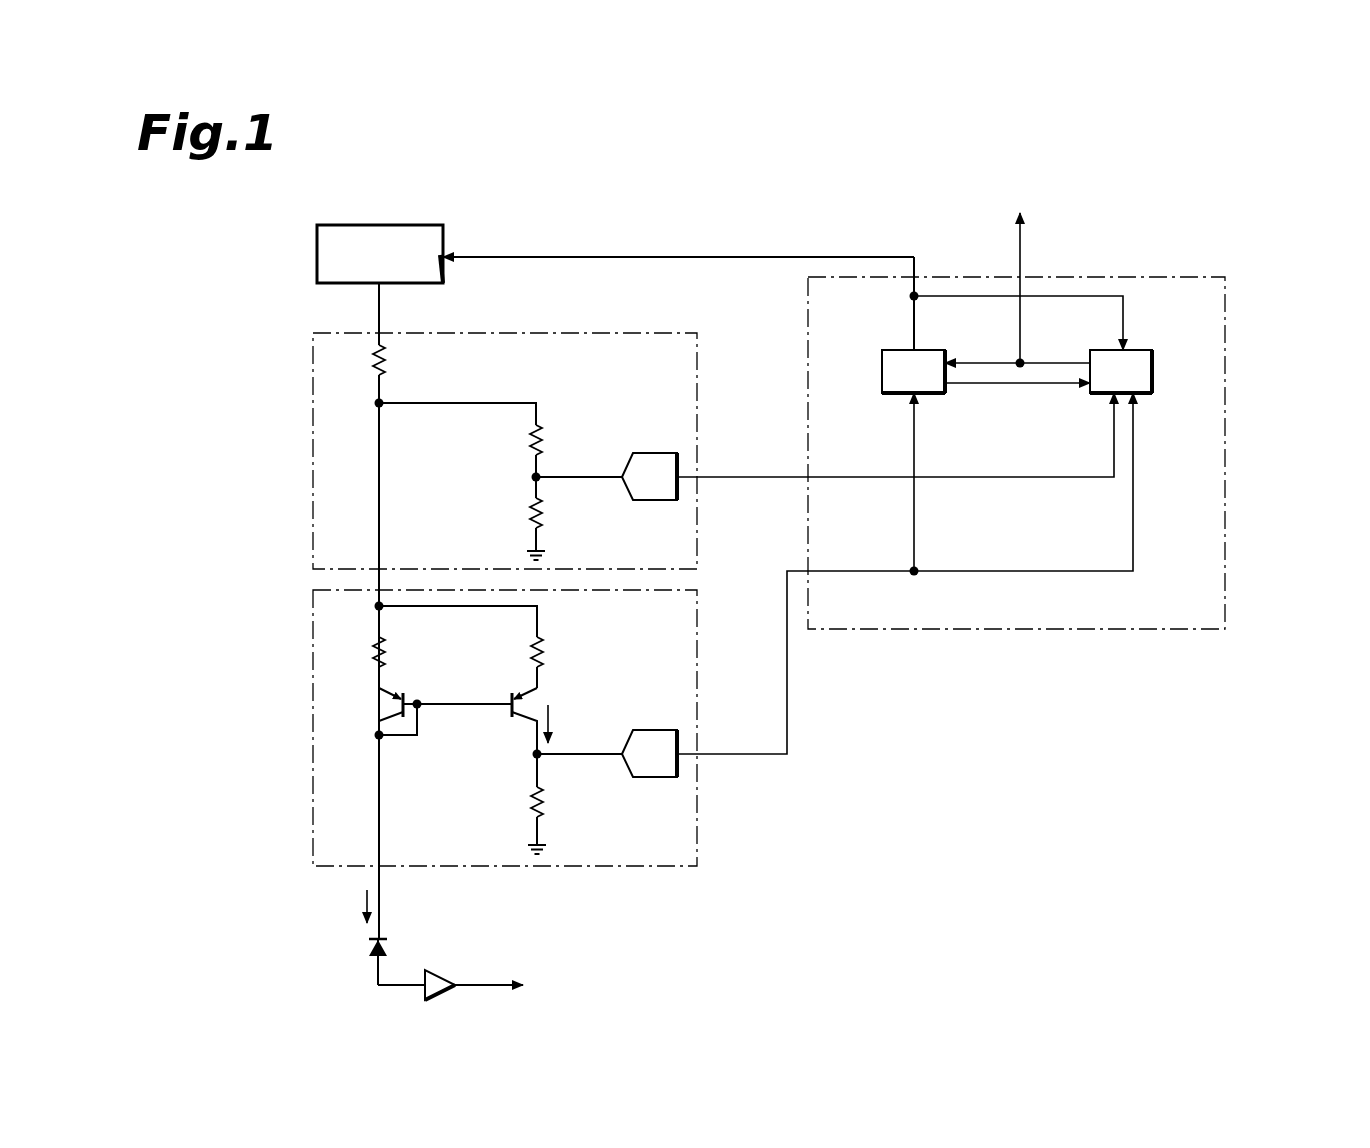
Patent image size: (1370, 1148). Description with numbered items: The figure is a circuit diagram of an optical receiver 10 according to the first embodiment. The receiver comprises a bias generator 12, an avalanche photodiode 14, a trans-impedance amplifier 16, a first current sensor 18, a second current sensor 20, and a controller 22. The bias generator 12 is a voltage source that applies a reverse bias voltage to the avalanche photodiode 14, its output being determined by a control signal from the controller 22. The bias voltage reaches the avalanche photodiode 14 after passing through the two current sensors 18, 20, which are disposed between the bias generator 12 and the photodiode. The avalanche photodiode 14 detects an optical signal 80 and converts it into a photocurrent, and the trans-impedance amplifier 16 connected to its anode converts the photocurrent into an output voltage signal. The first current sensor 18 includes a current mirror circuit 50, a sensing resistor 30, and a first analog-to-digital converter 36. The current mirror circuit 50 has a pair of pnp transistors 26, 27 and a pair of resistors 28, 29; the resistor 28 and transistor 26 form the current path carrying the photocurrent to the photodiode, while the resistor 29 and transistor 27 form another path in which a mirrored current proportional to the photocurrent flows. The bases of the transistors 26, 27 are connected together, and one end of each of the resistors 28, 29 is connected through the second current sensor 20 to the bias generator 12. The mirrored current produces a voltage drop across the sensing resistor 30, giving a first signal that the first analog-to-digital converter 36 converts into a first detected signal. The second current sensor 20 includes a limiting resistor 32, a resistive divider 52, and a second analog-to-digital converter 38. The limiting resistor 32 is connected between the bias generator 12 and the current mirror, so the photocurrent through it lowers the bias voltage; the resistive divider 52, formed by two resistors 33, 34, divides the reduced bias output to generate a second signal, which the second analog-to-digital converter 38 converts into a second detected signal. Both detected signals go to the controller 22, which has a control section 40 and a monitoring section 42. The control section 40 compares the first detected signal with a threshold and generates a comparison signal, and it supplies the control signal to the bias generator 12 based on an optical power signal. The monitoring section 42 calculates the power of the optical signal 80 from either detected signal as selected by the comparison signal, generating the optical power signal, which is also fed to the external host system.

The optical receiver 10 is at (1295, 252).
The bias generator 12 is at (317, 254).
The avalanche photodiode 14 is at (372, 956).
The trans-impedance amplifier 16 is at (422, 988).
The first current sensor 18 is at (313, 692).
The second current sensor 20 is at (313, 393).
The controller 22 is at (1225, 336).
The pnp transistor 26 is at (405, 694).
The pnp transistor 27 is at (512, 694).
The resistor 28 is at (382, 649).
The resistor 29 is at (532, 649).
The sensing resistor 30 is at (532, 798).
The limiting resistor 32 is at (377, 357).
The resistor 33 is at (532, 435).
The resistor 34 is at (532, 510).
The first analog-to-digital converter 36 is at (656, 729).
The second analog-to-digital converter 38 is at (656, 453).
The control section 40 is at (882, 370).
The monitoring section 42 is at (1152, 370).
The current mirror circuit 50 is at (438, 745).
The resistive divider 52 is at (546, 397).
The optical signal 80 is at (364, 954).